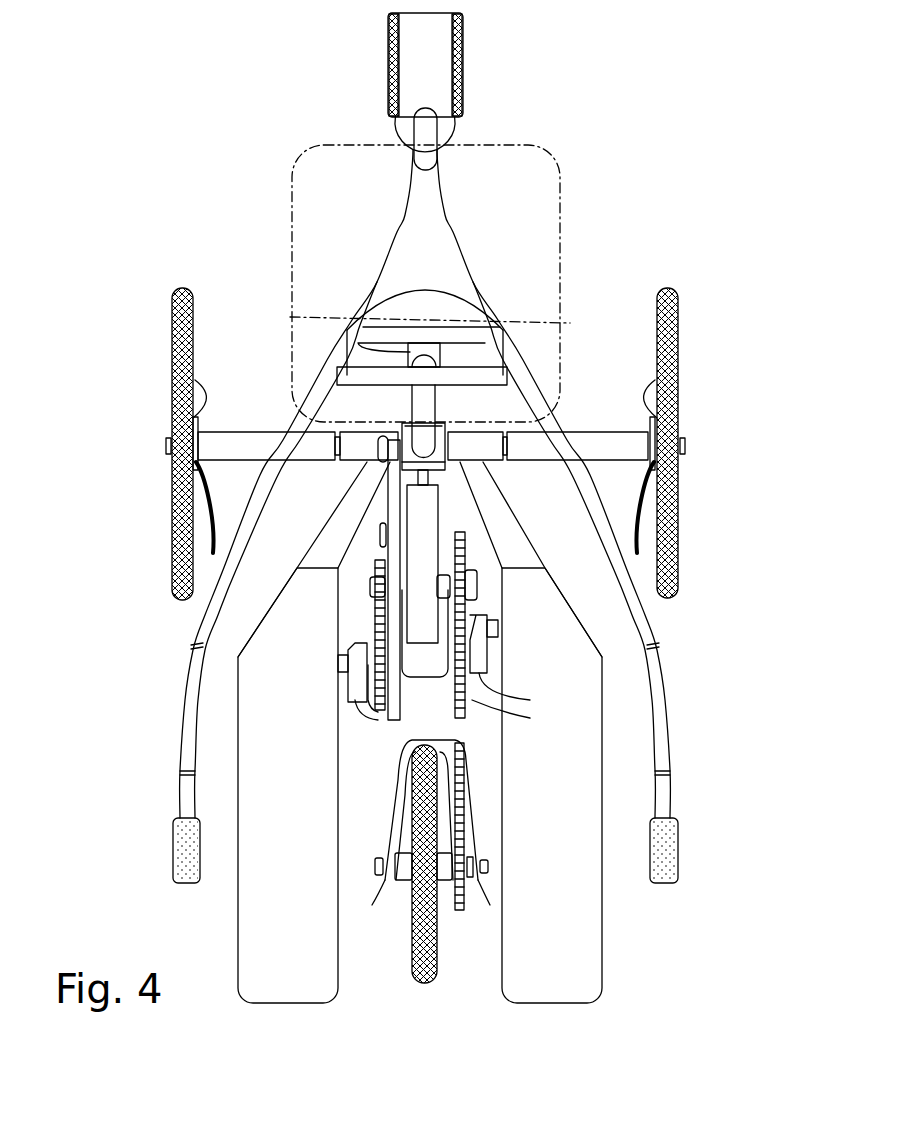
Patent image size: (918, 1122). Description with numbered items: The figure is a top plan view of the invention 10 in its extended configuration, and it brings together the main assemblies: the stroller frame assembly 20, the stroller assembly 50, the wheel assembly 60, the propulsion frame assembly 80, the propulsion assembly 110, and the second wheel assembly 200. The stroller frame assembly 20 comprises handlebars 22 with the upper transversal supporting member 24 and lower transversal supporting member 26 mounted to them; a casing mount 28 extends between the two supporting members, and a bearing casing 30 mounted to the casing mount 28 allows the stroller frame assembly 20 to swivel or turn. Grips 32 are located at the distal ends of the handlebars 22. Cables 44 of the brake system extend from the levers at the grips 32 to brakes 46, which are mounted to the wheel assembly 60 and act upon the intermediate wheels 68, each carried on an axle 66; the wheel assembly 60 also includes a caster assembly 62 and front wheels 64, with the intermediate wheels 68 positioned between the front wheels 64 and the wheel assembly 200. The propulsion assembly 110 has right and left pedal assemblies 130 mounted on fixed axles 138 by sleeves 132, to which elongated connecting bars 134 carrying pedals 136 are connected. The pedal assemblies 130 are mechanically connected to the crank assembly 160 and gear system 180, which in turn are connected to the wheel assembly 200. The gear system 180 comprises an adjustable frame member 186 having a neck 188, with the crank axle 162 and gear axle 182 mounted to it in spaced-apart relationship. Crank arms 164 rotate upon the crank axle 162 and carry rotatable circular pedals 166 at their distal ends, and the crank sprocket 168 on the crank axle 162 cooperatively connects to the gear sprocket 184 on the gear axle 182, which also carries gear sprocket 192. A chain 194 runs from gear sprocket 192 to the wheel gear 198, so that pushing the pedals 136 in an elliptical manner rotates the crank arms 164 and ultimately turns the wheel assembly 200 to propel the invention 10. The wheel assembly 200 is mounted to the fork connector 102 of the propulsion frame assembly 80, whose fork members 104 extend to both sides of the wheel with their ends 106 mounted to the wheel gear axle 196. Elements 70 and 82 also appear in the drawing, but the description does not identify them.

The invention 10 is at (695, 92).
The stroller frame assembly 20 is at (402, 207).
The handlebar 22 is at (178, 800).
The upper transversal supporting member 24 is at (400, 330).
The lower transversal supporting member 26 is at (463, 377).
The casing mount 28 is at (362, 350).
The bearing casing 30 is at (423, 357).
The grip 32 is at (172, 857).
The cable 44 is at (195, 465).
The brake 46 is at (200, 435).
The stroller assembly 50 is at (506, 138).
The wheel assembly 60 is at (386, 39).
The caster assembly 62 is at (405, 123).
The front wheel 64 is at (392, 78).
The axle 66 is at (170, 445).
The intermediate wheel 68 is at (168, 308).
The cross bar 70 is at (226, 445).
The propulsion frame assembly 80 is at (495, 607).
The steering housing 82 is at (357, 370).
The fork connector 102 is at (377, 710).
The fork member 104 is at (400, 790).
The end 106 is at (385, 887).
The propulsion assembly 110 is at (466, 375).
The pedal assembly 130 is at (236, 773).
The sleeve 132 is at (413, 405).
The elongated connecting bar 134 is at (353, 500).
The pedal 136 is at (240, 957).
The fixed axle 138 is at (347, 430).
The crank assembly 160 is at (366, 568).
The crank axle 162 is at (347, 667).
The crank arm 164 is at (368, 598).
The circular pedal 166 is at (357, 643).
The crank sprocket 168 is at (362, 680).
The gear system 180 is at (470, 557).
The gear axle 182 is at (340, 600).
The gear sprocket 184 is at (388, 545).
The adjustable frame member 186 is at (418, 504).
The neck 188 is at (640, 500).
The gear sprocket 192 is at (468, 548).
The chain 194 is at (497, 717).
The wheel gear axle 196 is at (407, 845).
The wheel gear 198 is at (460, 912).
The second wheel assembly 200 is at (410, 905).